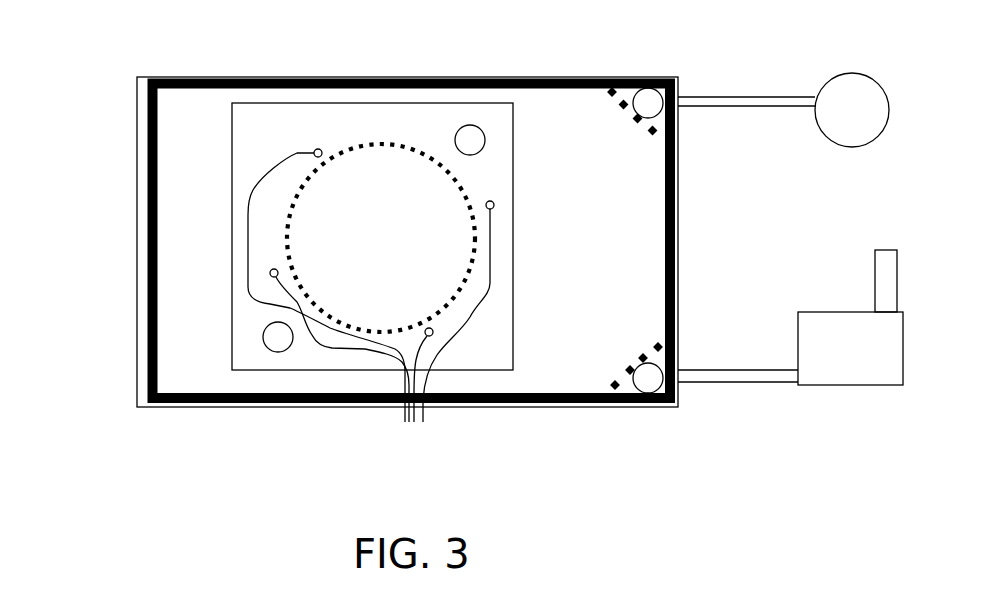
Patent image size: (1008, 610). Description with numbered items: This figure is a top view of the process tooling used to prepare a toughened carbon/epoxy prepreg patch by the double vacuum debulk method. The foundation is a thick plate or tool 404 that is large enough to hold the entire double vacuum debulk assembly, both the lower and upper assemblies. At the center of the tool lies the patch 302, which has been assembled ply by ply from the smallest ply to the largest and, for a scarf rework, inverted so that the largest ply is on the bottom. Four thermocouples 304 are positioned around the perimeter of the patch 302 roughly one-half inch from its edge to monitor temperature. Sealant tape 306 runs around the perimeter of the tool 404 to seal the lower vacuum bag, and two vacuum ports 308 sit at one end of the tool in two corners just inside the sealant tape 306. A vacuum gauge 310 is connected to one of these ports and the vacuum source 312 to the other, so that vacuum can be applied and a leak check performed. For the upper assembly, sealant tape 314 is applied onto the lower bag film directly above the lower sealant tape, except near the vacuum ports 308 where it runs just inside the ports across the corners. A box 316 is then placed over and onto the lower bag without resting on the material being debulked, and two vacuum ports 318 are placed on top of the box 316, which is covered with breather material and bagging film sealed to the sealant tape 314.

The patch 302 is at (423, 273).
The thermocouples 304 is at (248, 203).
The sealant tape 306 is at (628, 84).
The vacuum ports 308 is at (652, 76).
The vacuum gauge 310 is at (827, 82).
The vacuum source 312 is at (798, 350).
The sealant tape 314 is at (617, 395).
The box 316 is at (378, 117).
The vacuum ports 318 is at (459, 128).
The tool 404 is at (137, 138).